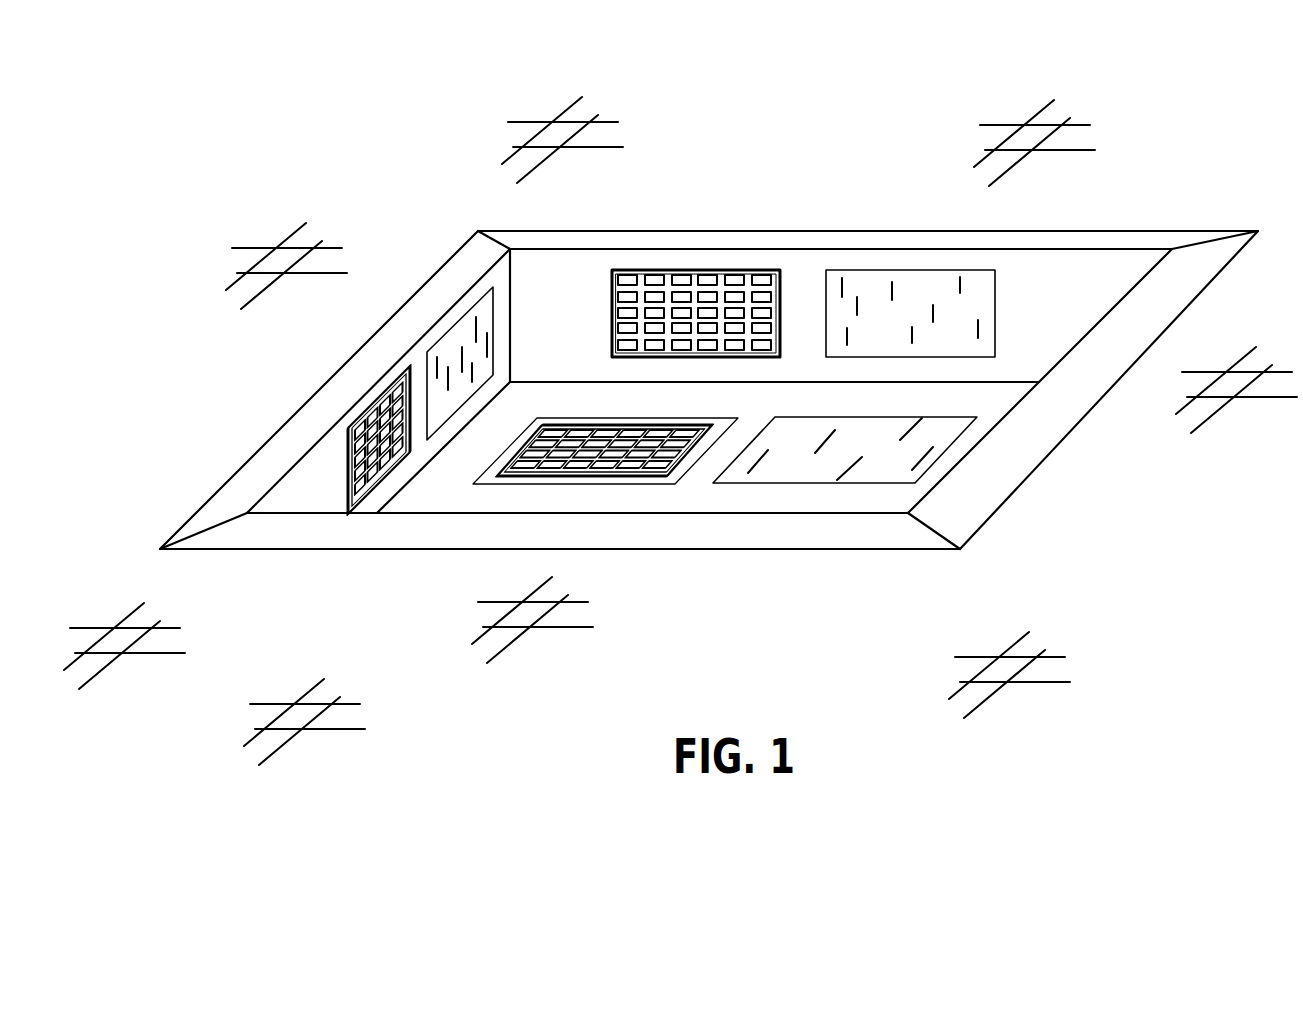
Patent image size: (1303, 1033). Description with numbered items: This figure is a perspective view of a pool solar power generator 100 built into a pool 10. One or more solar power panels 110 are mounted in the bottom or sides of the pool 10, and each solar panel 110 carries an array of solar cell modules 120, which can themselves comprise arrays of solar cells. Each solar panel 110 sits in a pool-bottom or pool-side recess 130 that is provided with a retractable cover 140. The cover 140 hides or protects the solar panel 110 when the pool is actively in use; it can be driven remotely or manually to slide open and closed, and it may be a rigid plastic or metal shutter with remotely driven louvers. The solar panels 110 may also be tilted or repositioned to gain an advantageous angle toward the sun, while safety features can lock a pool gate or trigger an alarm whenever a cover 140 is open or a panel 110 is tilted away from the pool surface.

The pool 10 is at (1178, 238).
The pool solar power generator 100 is at (750, 84).
The solar power panel 110 is at (763, 268).
The solar cell module 120 is at (655, 282).
The pool-bottom or pool-side recess 130 is at (693, 273).
The retractable cover 140 is at (928, 280).